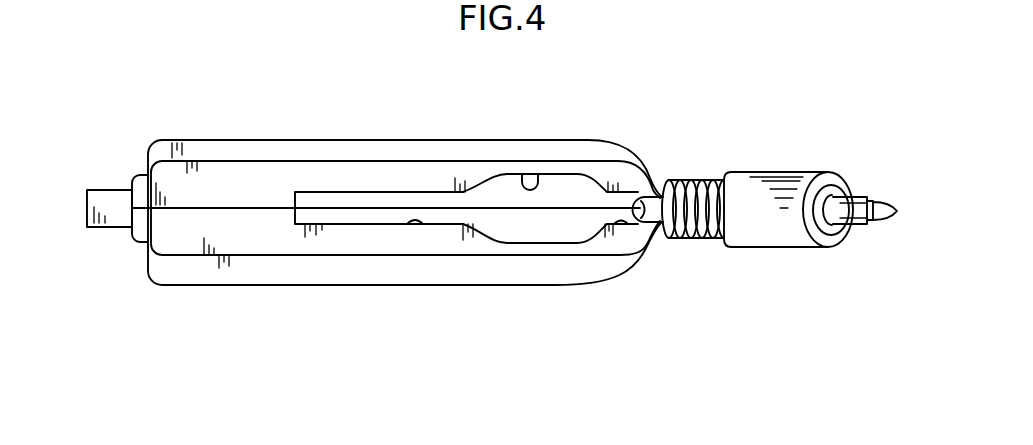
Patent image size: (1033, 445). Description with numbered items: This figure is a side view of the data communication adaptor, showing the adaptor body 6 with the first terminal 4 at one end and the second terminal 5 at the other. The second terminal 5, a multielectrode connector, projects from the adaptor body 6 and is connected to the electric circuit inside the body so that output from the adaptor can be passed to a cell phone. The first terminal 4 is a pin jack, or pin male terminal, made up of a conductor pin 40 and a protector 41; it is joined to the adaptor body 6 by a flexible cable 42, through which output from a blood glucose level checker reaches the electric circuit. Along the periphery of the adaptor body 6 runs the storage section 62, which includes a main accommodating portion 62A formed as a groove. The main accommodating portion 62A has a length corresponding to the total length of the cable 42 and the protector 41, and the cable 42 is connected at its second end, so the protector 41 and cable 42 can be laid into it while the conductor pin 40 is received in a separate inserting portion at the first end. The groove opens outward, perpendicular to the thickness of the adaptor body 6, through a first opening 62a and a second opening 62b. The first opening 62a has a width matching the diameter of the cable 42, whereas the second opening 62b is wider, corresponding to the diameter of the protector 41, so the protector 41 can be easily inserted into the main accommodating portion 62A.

The first terminal 4 is at (765, 190).
The second terminal 5 is at (108, 200).
The adaptor body 6 is at (353, 128).
The conductor pin 40 is at (851, 229).
The protector 41 is at (783, 172).
The flexible cable 42 is at (643, 230).
The storage section 62 is at (539, 231).
The main accommodating portion 62A is at (414, 196).
The first opening 62a is at (413, 227).
The second opening 62b is at (537, 173).